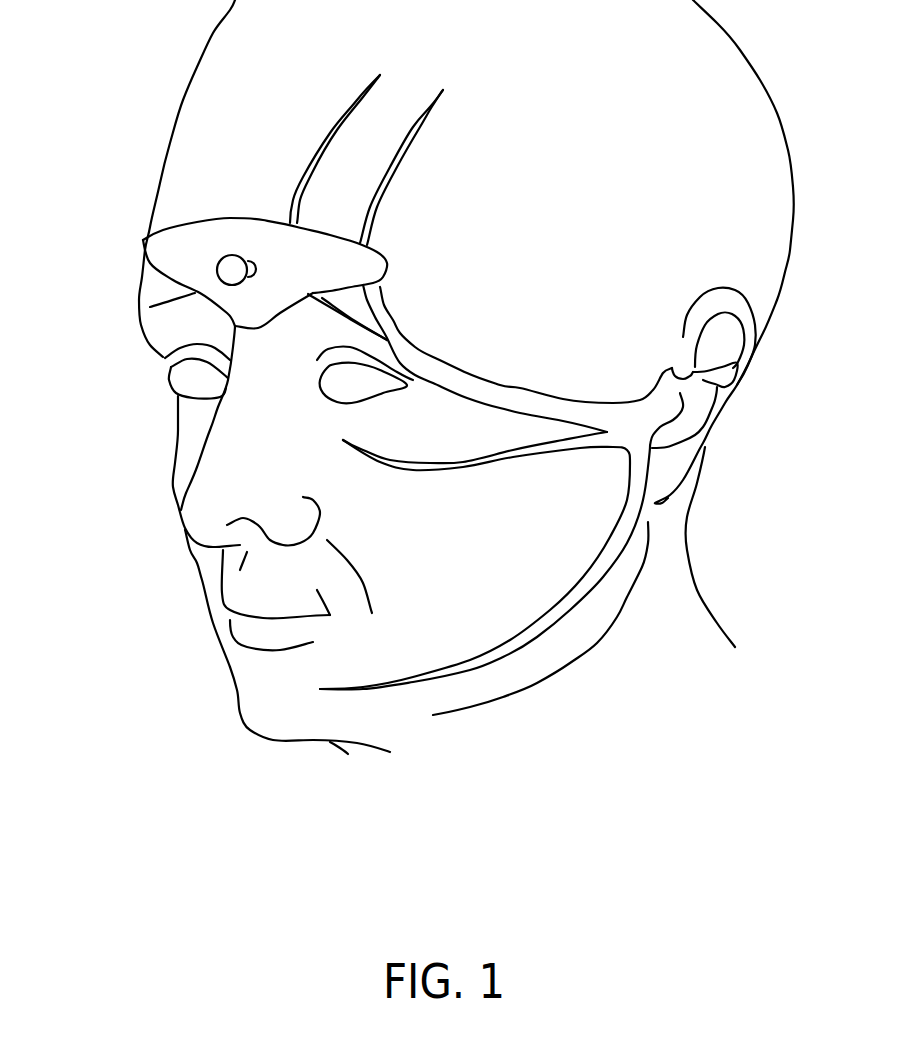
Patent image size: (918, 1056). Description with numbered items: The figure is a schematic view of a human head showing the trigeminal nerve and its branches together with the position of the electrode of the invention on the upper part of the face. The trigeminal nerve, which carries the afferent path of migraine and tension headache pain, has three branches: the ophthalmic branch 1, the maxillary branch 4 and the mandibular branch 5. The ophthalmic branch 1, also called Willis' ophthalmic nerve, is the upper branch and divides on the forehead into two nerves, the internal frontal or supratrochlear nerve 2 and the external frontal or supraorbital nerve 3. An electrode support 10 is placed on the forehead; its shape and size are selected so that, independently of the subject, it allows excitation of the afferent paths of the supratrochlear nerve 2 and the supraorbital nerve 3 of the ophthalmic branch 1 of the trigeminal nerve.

The ophthalmic branch 1 is at (503, 391).
The internal frontal (supratrochlear) nerve 2 is at (330, 132).
The external frontal (supraorbital) nerve 3 is at (430, 162).
The maxillary branch 4 is at (447, 468).
The mandibular branch 5 is at (520, 640).
The electrode support 10 is at (160, 253).